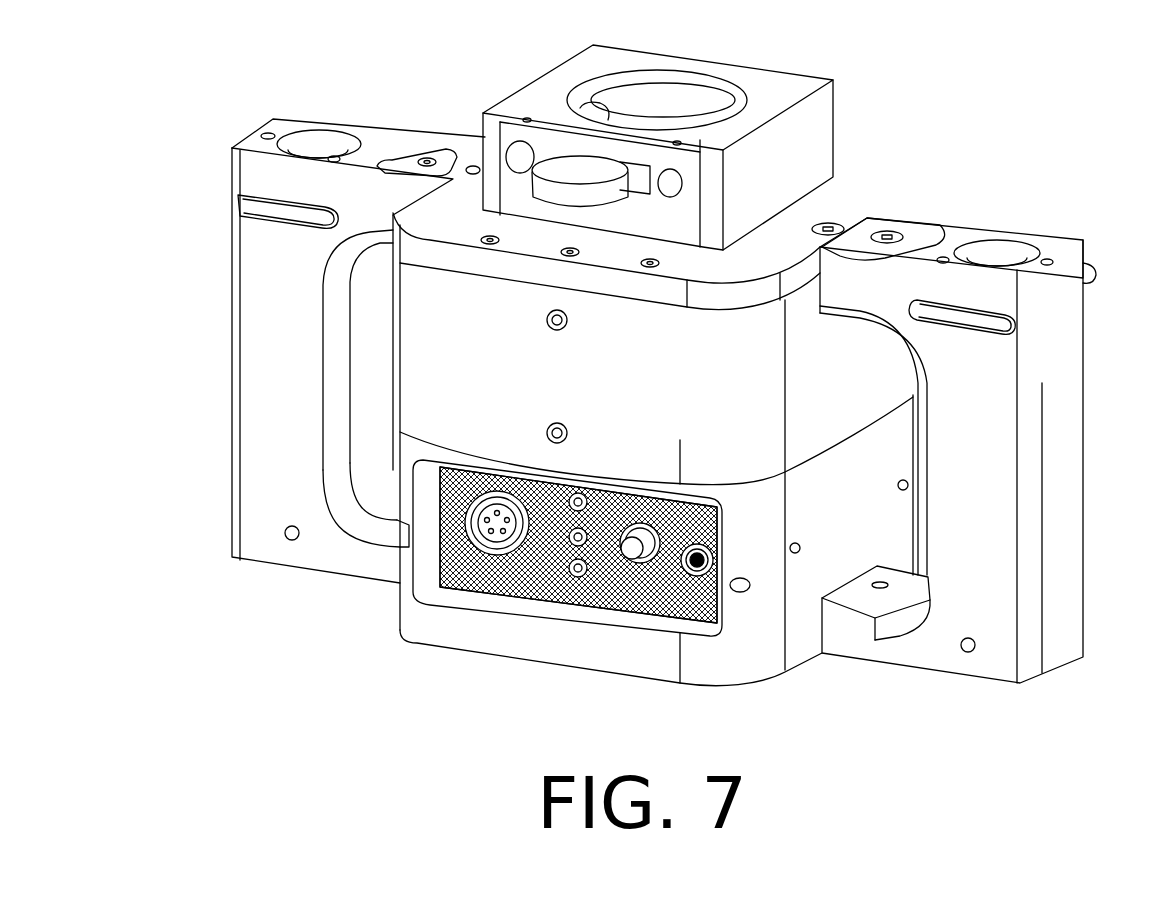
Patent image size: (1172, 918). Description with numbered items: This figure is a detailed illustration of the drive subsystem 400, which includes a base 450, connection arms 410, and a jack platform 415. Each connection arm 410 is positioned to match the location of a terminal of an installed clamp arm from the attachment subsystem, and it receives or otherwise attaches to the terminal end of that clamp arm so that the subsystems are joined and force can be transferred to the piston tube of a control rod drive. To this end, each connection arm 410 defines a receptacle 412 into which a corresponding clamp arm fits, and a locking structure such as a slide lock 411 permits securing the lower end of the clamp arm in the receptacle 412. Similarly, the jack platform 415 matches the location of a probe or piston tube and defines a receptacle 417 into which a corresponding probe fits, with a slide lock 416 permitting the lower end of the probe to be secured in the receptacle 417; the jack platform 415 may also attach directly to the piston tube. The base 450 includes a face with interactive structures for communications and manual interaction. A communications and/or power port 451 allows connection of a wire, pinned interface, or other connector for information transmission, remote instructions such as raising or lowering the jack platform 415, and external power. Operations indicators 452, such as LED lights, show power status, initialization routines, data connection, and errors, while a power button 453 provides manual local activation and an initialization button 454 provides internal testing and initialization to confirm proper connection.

The drive subsystem 400 is at (1041, 134).
The connection arm 410 is at (267, 535).
The slide lock 411 is at (238, 207).
The receptacle 412 is at (327, 148).
The jack platform 415 is at (800, 137).
The slide lock 416 is at (537, 163).
The receptacle 417 is at (687, 107).
The base 450 is at (531, 595).
The communications and/or power port 451 is at (487, 550).
The operations indicators 452 is at (573, 575).
The power button 453 is at (627, 575).
The initialization button 454 is at (717, 570).